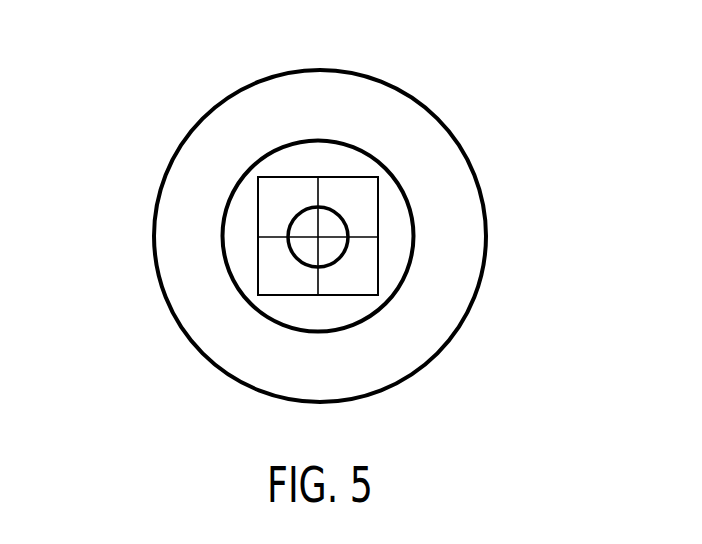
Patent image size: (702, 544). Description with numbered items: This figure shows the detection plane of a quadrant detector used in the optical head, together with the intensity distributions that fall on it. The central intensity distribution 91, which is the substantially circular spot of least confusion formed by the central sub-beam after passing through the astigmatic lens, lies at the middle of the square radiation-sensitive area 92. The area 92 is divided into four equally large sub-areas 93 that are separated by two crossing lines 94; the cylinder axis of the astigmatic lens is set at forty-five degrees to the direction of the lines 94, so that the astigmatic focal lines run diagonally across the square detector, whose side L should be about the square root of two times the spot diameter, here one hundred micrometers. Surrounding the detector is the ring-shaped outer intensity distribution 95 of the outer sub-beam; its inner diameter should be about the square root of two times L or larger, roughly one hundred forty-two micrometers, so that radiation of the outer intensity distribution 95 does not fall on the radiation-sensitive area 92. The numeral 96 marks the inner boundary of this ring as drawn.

The central intensity distribution 91 is at (342, 258).
The radiation-sensitive area 92 is at (378, 261).
The sub-areas 93 is at (367, 215).
The lines 94 is at (318, 192).
The outer intensity distribution 95 is at (417, 131).
The inner circle 96 is at (371, 150).